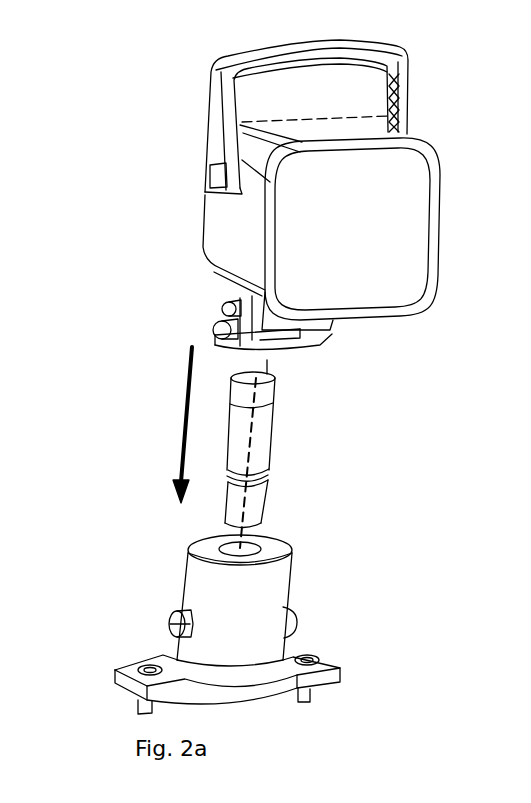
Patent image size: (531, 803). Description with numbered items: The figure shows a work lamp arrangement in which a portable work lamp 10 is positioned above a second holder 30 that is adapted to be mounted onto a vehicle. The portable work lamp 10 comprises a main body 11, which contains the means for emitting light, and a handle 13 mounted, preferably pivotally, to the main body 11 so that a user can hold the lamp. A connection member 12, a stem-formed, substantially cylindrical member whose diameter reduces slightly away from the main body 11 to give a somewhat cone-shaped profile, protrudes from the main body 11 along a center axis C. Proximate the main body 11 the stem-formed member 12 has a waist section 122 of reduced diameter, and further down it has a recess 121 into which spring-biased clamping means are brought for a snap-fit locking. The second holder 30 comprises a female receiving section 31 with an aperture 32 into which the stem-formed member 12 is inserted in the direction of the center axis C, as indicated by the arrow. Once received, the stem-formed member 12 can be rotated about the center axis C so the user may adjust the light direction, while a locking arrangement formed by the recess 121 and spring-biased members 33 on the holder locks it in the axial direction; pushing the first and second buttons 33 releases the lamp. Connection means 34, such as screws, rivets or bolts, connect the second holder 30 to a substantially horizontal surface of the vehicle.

The portable work lamp 10 is at (400, 197).
The main body 11 is at (438, 230).
The connection member 12 is at (258, 437).
The handle 13 is at (408, 108).
The recess 121 is at (262, 478).
The waist section 122 is at (267, 364).
The center axis C is at (245, 508).
The second holder 30 is at (353, 677).
The female receiving section 31 is at (311, 593).
The aperture 32 is at (262, 545).
The spring-biased members 33 is at (173, 618).
The connection means 34 is at (142, 710).